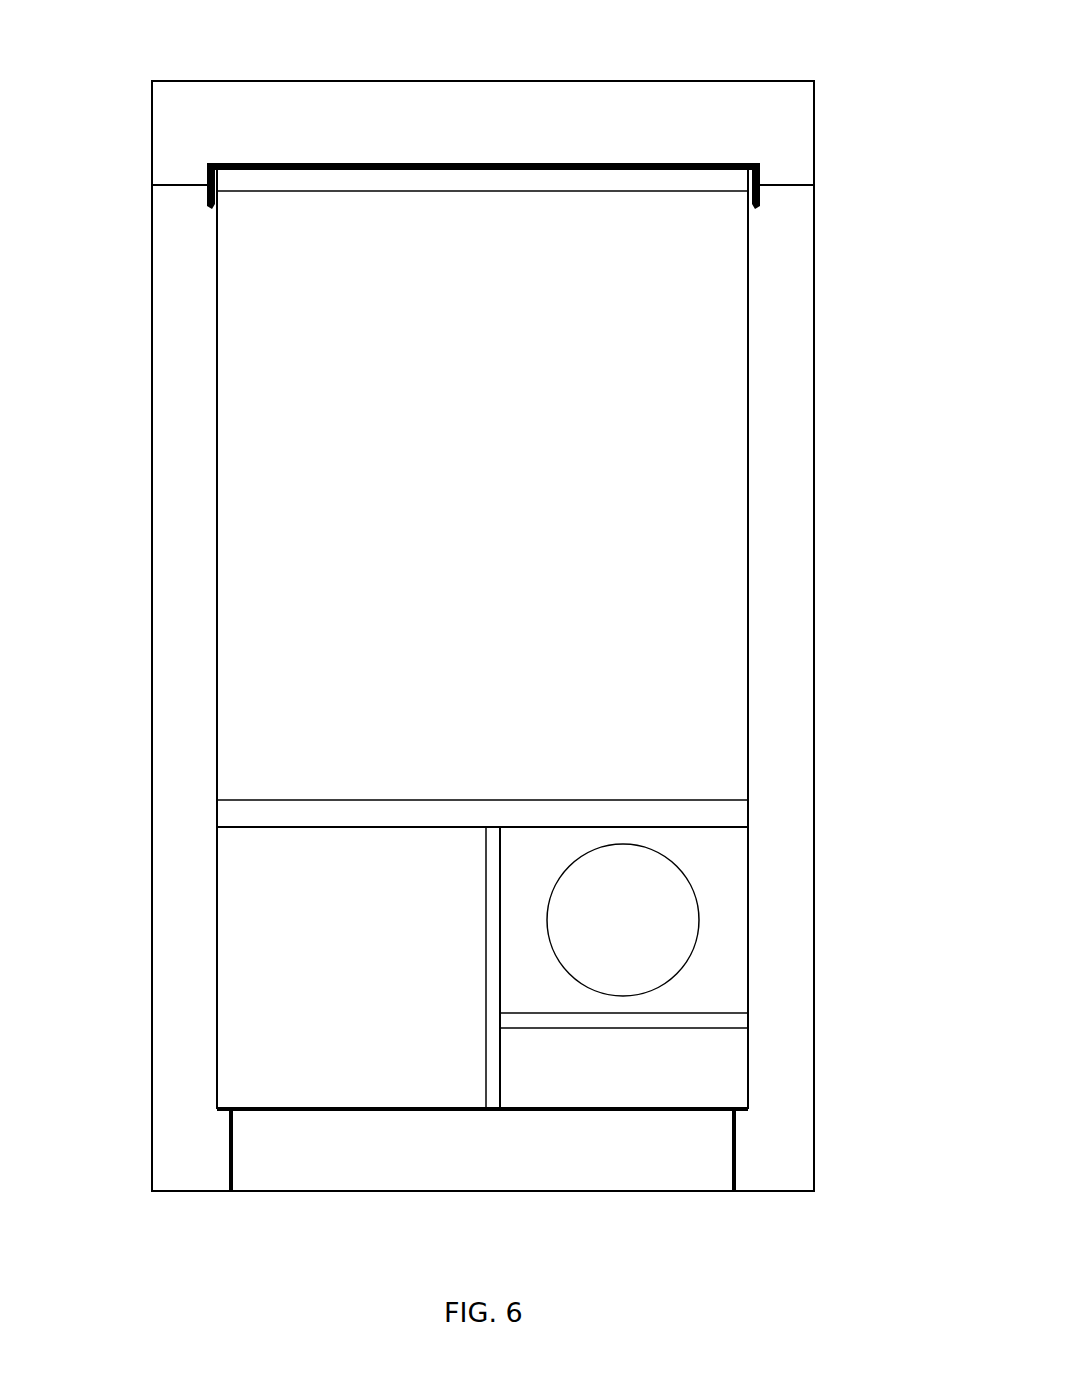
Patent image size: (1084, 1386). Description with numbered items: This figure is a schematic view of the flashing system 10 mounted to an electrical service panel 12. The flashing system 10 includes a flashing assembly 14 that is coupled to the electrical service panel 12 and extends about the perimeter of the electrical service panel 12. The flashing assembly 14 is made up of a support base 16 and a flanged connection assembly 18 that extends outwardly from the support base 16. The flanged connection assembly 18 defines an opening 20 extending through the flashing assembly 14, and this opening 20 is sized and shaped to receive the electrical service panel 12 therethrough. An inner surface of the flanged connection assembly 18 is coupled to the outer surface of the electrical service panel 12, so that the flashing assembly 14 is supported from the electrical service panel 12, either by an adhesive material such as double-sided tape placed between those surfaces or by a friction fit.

The flashing system 10 is at (104, 108).
The electrical service panel 12 is at (215, 497).
The flashing assembly 14 is at (846, 99).
The support base 16 is at (815, 325).
The flanged connection assembly 18 is at (748, 548).
The opening 20 is at (710, 722).